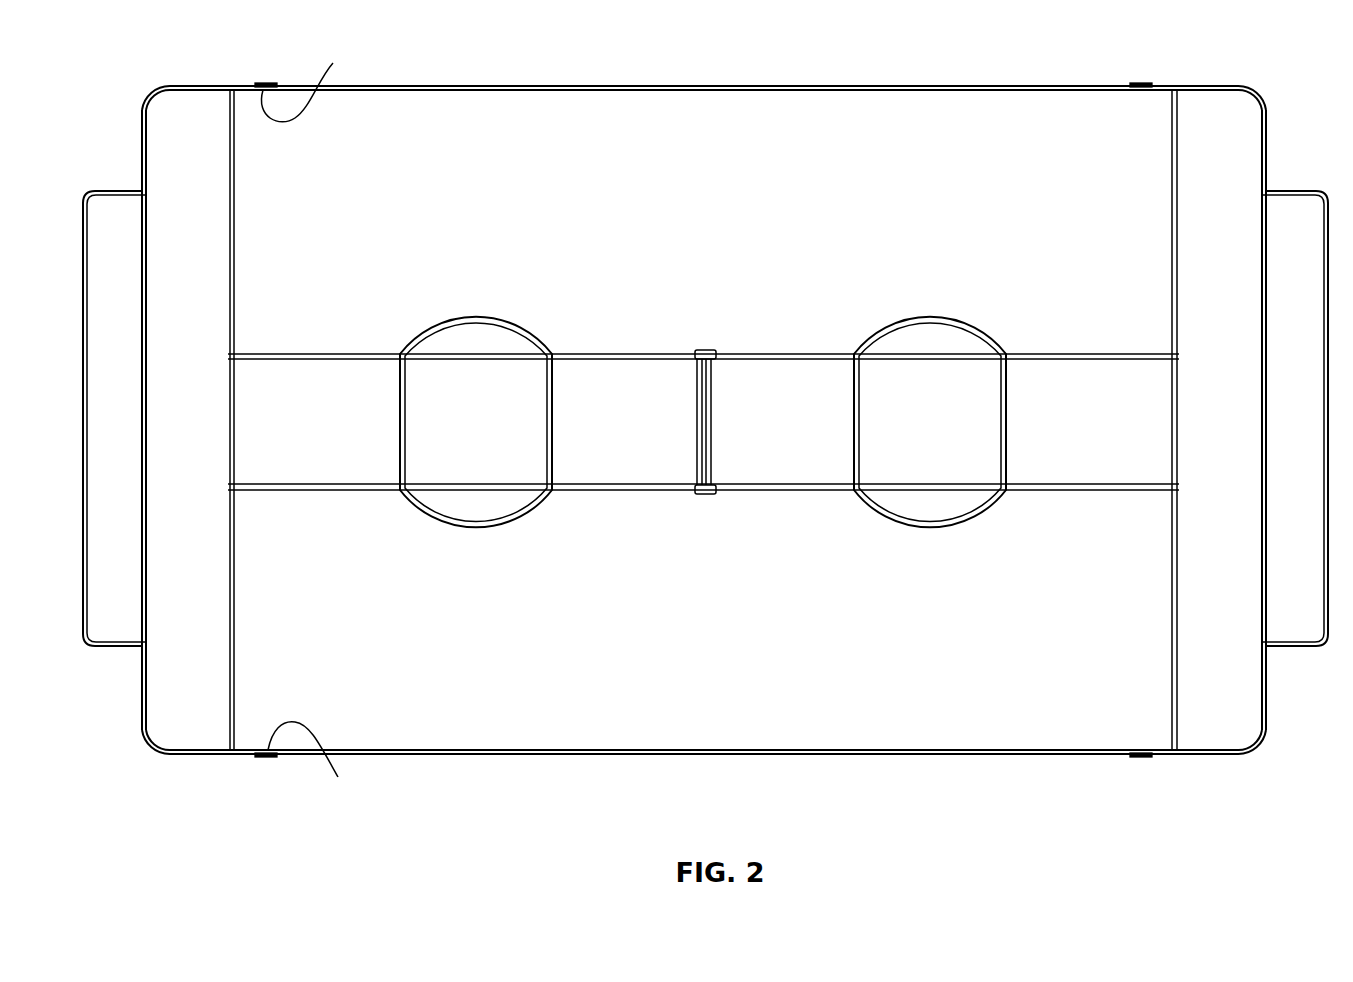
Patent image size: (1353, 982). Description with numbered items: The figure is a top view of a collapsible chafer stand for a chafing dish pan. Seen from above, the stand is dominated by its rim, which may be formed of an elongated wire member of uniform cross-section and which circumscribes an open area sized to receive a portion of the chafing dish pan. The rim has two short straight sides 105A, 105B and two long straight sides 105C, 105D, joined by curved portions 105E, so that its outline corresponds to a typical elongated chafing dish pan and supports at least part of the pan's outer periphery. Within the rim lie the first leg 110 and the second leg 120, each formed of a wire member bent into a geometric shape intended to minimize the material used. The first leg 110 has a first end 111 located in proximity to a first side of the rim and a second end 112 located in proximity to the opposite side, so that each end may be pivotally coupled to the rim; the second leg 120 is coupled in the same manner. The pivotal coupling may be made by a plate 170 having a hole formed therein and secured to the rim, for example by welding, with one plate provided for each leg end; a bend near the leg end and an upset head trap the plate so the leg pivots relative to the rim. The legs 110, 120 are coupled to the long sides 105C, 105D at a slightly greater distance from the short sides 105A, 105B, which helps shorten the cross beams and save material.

The short straight side 105A is at (140, 673).
The short straight side 105B is at (1265, 677).
The long straight side 105C is at (963, 757).
The long straight side 105D is at (932, 82).
The curved portion 105E is at (148, 100).
The first leg 110 is at (225, 715).
The second leg 120 is at (1178, 718).
The first end 111 is at (323, 761).
The second end 112 is at (317, 86).
The plate 170 is at (270, 80).